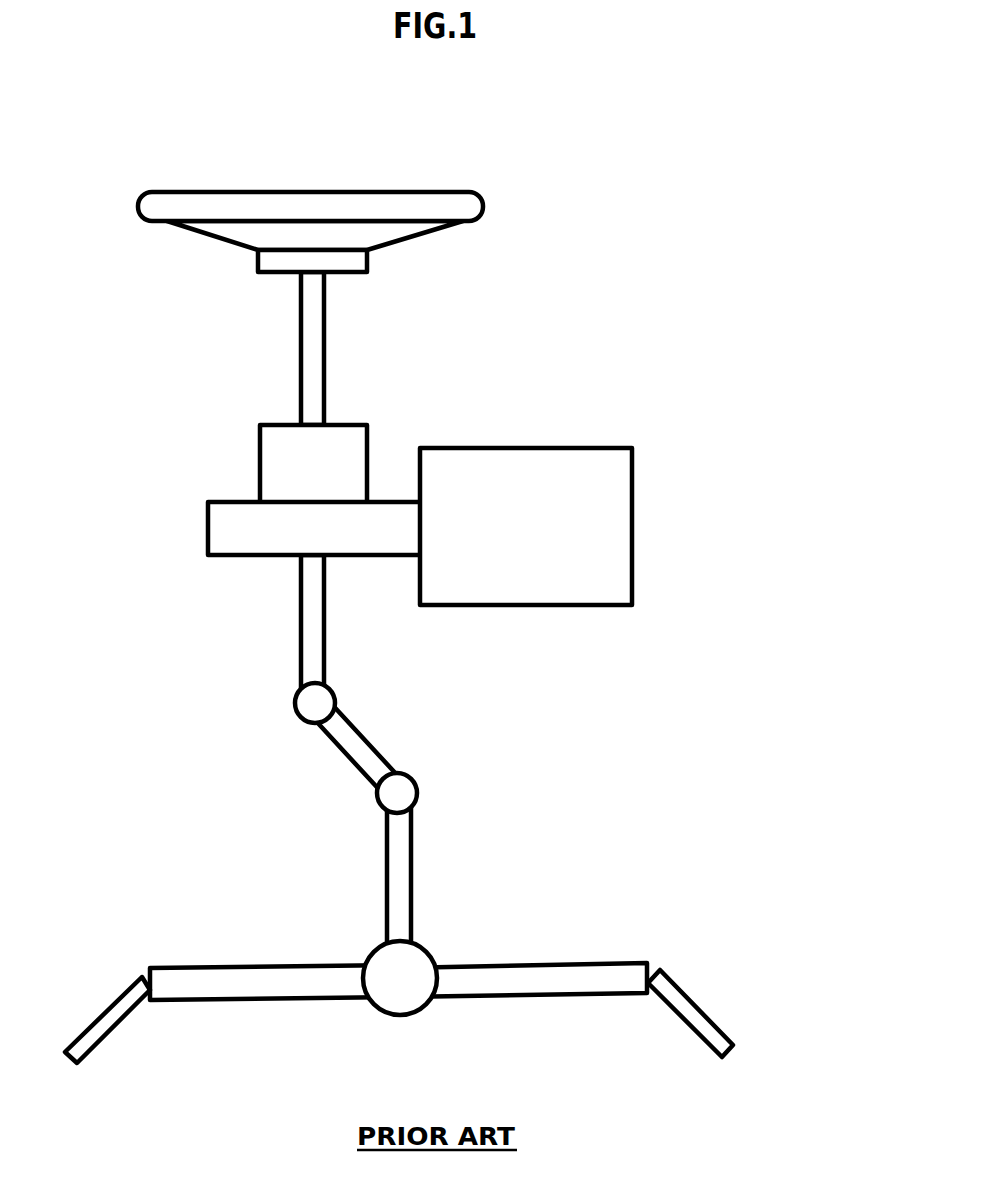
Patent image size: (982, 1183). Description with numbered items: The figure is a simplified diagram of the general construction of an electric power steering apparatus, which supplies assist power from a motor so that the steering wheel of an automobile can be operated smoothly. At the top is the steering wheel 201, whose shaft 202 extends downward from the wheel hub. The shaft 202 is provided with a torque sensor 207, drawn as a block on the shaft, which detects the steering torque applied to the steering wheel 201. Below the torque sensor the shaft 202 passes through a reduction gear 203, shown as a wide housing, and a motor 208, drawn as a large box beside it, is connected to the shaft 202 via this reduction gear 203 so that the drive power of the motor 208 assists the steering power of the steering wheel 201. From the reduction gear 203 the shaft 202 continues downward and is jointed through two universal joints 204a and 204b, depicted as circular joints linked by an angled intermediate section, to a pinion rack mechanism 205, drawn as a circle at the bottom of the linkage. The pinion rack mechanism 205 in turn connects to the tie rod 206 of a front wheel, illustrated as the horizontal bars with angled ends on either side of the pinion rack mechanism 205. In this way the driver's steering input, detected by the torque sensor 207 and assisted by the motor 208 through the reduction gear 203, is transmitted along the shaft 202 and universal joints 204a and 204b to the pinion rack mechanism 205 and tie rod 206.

The steering wheel 201 is at (486, 198).
The shaft 202 is at (324, 340).
The reduction gear 203 is at (208, 530).
The universal joint 204a is at (295, 707).
The universal joint 204b is at (378, 797).
The pinion rack mechanism 205 is at (427, 948).
The tie rod 206 is at (697, 1005).
The torque sensor 207 is at (260, 467).
The motor 208 is at (632, 522).